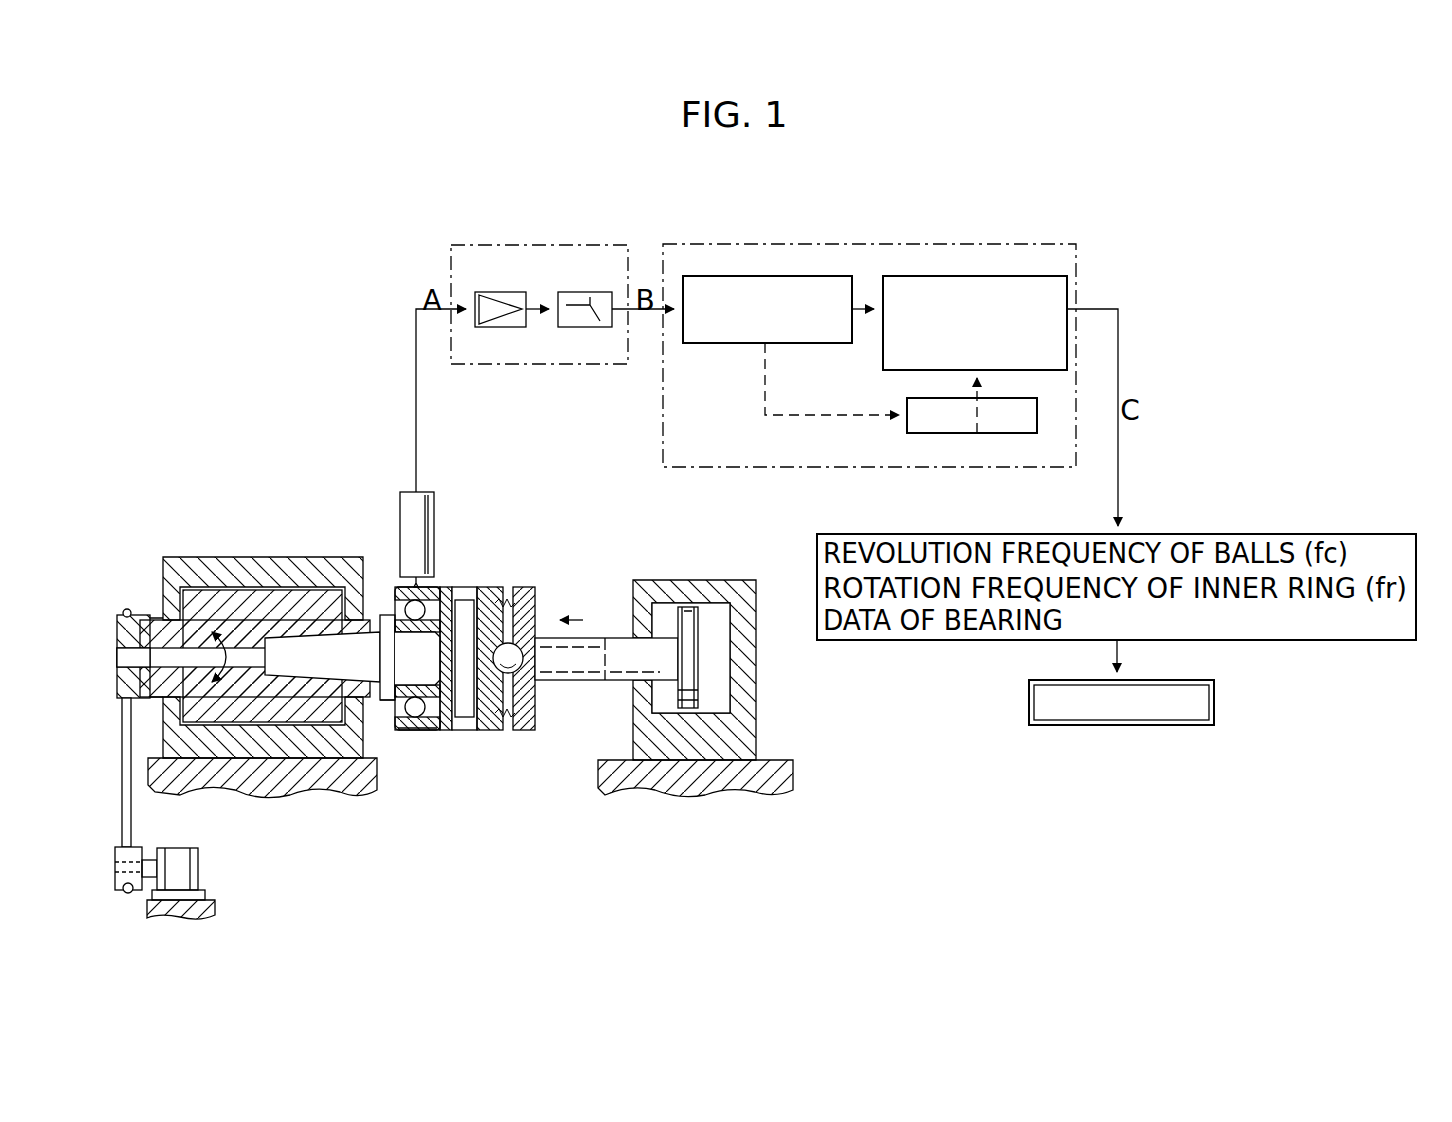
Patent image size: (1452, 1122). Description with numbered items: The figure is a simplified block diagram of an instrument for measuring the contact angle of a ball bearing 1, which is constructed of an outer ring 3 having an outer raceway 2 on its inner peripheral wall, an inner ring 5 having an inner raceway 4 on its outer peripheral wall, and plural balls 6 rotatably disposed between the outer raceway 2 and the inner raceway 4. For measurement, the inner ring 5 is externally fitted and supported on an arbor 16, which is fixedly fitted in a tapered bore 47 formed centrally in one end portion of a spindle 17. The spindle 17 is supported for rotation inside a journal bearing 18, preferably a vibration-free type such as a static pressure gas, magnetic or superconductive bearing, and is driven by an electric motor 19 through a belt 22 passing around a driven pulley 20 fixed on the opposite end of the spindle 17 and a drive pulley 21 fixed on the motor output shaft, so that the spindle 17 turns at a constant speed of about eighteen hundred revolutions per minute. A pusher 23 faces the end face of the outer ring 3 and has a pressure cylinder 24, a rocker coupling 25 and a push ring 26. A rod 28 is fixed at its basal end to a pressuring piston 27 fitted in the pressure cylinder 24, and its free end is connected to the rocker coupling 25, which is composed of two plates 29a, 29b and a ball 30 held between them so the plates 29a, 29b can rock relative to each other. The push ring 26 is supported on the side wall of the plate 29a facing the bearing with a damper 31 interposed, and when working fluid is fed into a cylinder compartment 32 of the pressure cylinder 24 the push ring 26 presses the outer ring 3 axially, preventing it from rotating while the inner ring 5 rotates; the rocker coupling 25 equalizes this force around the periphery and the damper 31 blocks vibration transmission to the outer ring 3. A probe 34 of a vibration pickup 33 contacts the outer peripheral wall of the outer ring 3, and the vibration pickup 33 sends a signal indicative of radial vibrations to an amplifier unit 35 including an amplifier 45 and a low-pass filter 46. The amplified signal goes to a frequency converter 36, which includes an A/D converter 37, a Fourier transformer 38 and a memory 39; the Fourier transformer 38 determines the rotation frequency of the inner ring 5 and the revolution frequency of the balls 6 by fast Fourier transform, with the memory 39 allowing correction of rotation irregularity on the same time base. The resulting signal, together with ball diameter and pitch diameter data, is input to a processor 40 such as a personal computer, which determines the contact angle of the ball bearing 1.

The ball bearing 1 is at (404, 655).
The outer raceway 2 is at (390, 603).
The outer ring 3 is at (437, 588).
The inner raceway 4 is at (403, 731).
The inner ring 5 is at (390, 702).
The balls 6 is at (405, 605).
The arbor 16 is at (305, 640).
The spindle 17 is at (228, 705).
The journal bearing 18 is at (232, 565).
The electric motor 19 is at (190, 875).
The driven pulley 20 is at (143, 616).
The drive pulley 21 is at (118, 893).
The belt 22 is at (131, 790).
The pusher 23 is at (568, 602).
The pressure cylinder 24 is at (748, 742).
The rocker coupling 25 is at (518, 662).
The push ring 26 is at (447, 731).
The pressuring piston 27 is at (688, 608).
The rod 28 is at (620, 640).
The plate 29a is at (490, 597).
The plate 29b is at (525, 597).
The ball 30 is at (522, 668).
The damper 31 is at (468, 731).
The cylinder compartment 32 is at (722, 622).
The vibration pickup 33 is at (434, 502).
The probe 34 is at (392, 587).
The amplifier unit 35 is at (562, 305).
The frequency converter 36 is at (869, 346).
The A/D converter 37 is at (695, 276).
The Fourier transformer 38 is at (968, 276).
The memory 39 is at (977, 434).
The processor 40 is at (1123, 727).
The amplifier 45 is at (497, 328).
The low-pass filter 46 is at (578, 328).
The tapered bore 47 is at (357, 700).